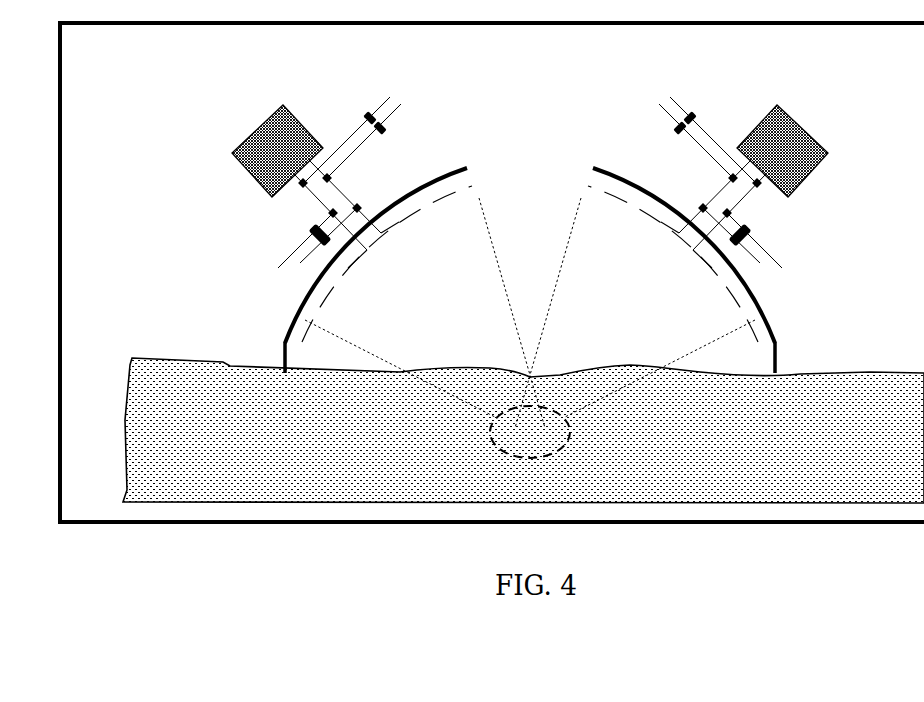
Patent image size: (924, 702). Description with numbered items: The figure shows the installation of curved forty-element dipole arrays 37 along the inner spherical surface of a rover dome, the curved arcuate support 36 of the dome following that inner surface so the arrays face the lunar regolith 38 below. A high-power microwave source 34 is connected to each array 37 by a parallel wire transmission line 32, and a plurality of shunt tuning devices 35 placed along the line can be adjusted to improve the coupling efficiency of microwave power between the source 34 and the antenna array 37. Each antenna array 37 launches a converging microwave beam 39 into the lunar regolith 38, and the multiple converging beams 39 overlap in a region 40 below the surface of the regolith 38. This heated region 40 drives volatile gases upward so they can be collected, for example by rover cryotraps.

The parallel wire transmission line 32 is at (346, 192).
The high-power microwave source 34 is at (262, 123).
The shunt tuning devices 35 is at (370, 112).
The arcuate support rail 36 is at (428, 185).
The dipole array 37 is at (400, 226).
The lunar regolith 38 is at (828, 380).
The converging microwave beam 39 is at (507, 297).
The region 40 is at (560, 450).